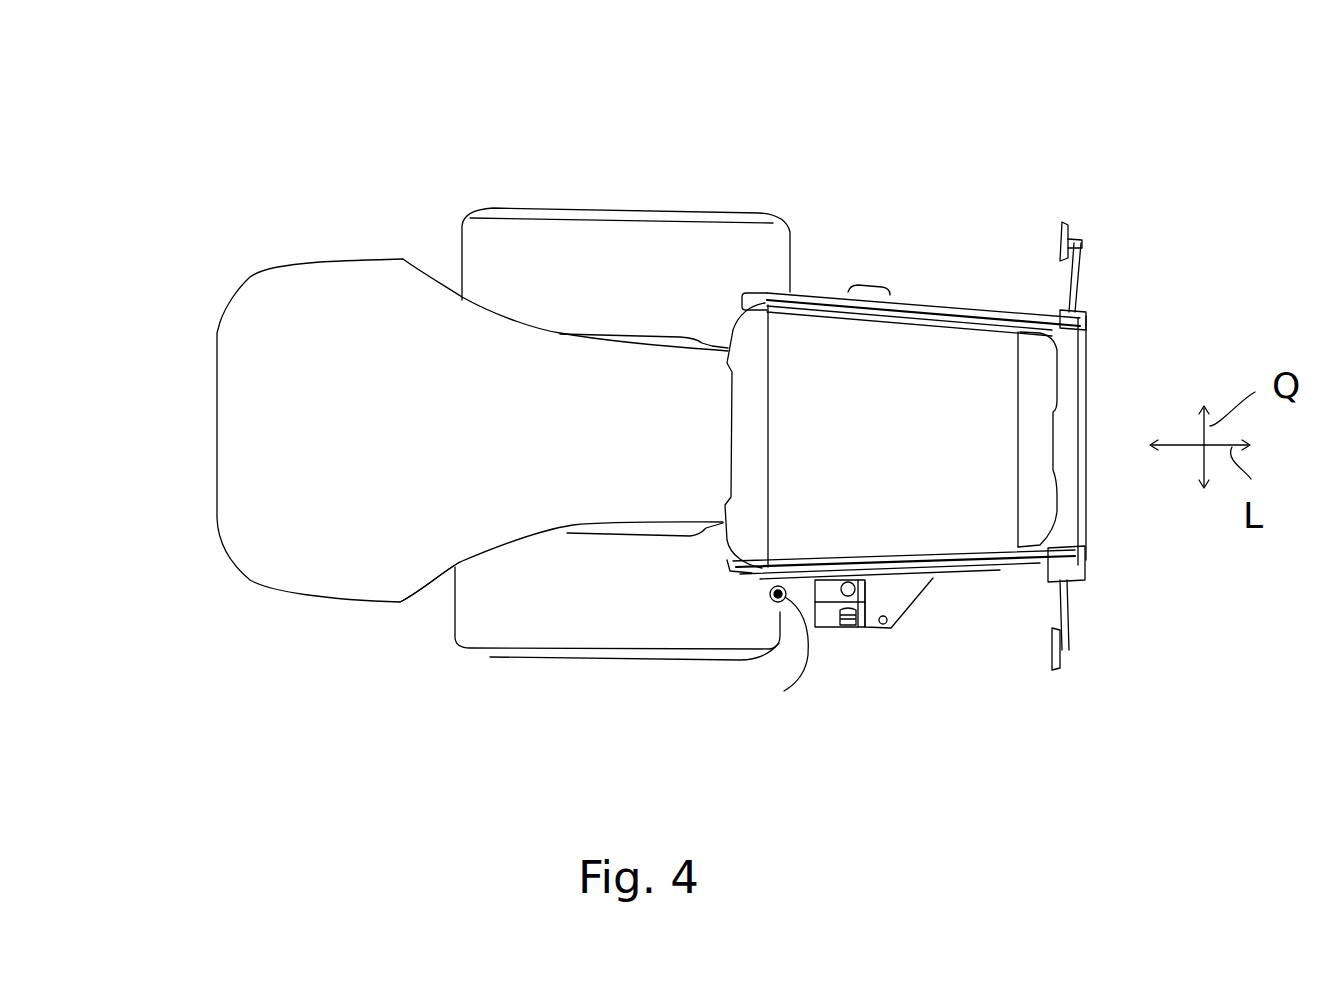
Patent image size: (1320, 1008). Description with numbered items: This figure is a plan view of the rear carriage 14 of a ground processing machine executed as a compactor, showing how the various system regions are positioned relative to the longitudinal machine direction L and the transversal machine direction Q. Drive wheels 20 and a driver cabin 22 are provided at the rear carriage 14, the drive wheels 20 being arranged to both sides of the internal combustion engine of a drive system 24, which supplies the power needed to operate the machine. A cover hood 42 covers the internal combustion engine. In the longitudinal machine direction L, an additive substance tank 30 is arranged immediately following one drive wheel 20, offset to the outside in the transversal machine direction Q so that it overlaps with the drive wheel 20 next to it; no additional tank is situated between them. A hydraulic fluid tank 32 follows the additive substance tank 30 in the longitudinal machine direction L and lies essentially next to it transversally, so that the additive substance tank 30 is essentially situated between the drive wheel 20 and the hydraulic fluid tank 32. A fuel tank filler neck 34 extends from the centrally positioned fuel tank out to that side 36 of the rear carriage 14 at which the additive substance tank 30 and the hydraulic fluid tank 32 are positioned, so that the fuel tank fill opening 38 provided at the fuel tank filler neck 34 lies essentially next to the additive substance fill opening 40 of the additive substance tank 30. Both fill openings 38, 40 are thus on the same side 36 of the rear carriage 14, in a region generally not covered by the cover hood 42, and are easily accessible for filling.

The rear carriage 14 is at (264, 96).
The drive wheels 20 is at (603, 208).
The driver cabin 22 is at (910, 343).
The drive system 24 is at (432, 590).
The additive substance tank 30 is at (832, 628).
The hydraulic fluid tank 32 is at (933, 577).
The fuel tank filler neck 34 is at (783, 675).
The side of the rear carriage 36 is at (881, 736).
The fuel tank fill opening 38 is at (772, 601).
The additive substance fill opening 40 is at (852, 628).
The cover hood 42 is at (360, 300).